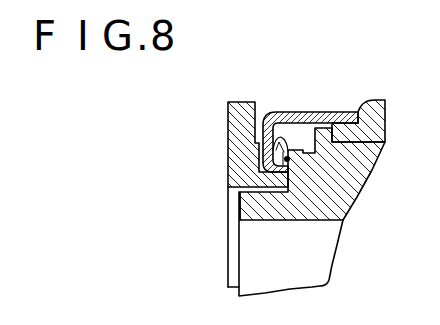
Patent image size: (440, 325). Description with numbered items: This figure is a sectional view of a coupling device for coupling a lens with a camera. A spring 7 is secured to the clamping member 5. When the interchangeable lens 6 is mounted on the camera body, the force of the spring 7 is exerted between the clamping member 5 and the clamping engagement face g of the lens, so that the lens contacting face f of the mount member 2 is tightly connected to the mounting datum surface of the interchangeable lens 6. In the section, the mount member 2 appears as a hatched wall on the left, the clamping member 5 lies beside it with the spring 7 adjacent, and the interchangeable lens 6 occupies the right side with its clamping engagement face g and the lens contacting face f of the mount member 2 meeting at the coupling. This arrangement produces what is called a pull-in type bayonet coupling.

The mount member 2 is at (227, 144).
The clamping member 5 is at (290, 111).
The interchangeable lens 6 is at (325, 212).
The spring 7 is at (301, 112).
The lens contacting face f is at (343, 217).
The clamping engagement face g is at (312, 200).